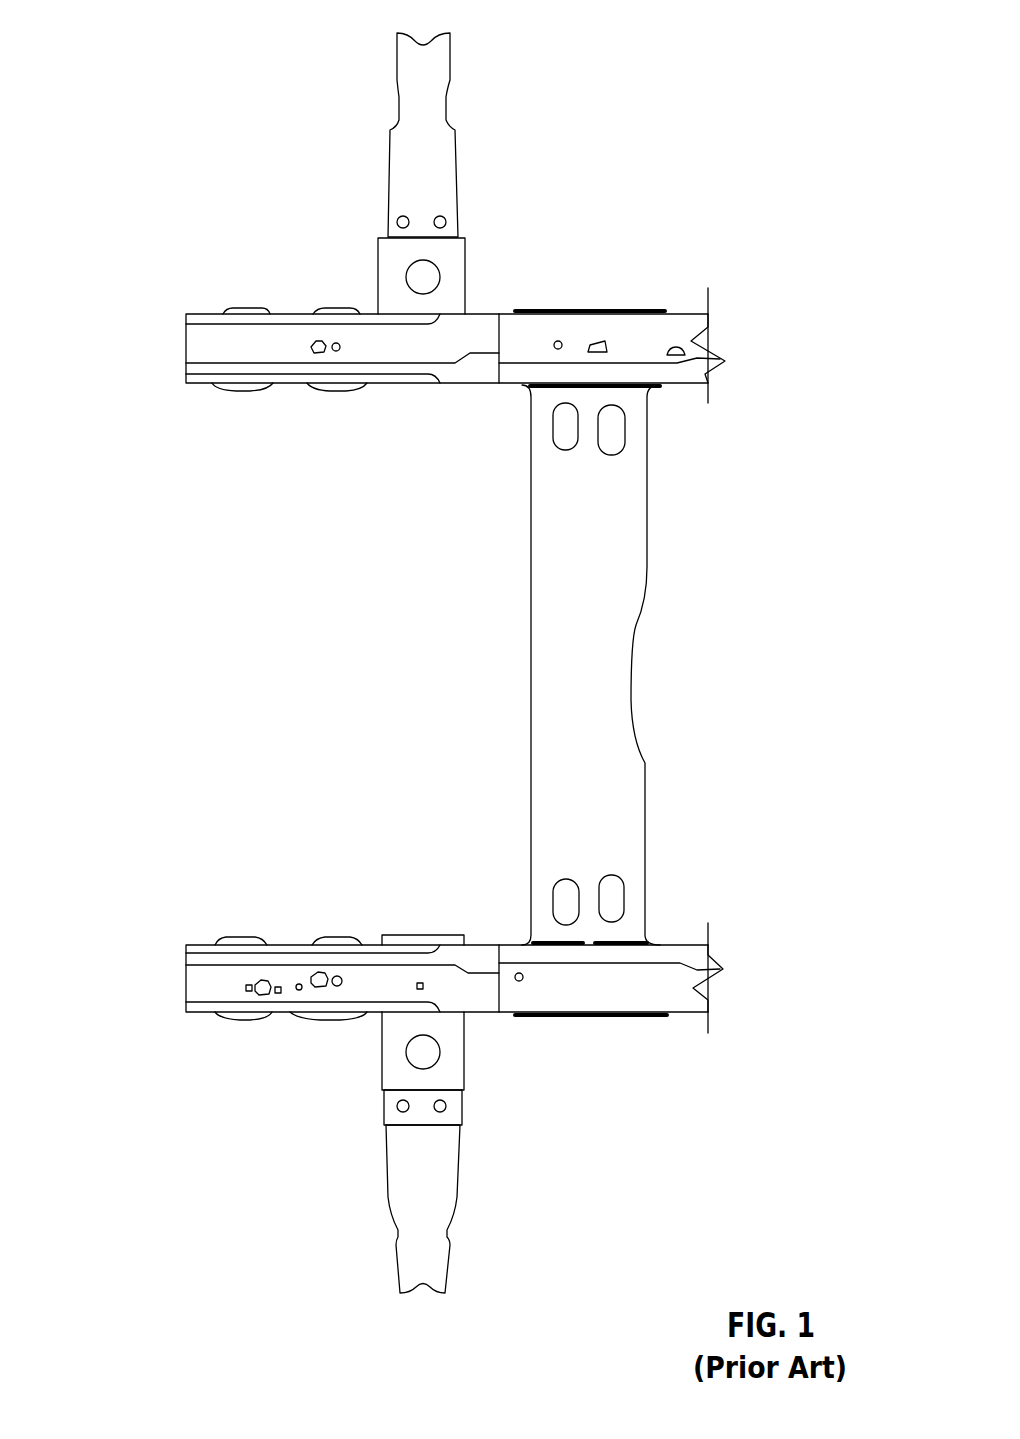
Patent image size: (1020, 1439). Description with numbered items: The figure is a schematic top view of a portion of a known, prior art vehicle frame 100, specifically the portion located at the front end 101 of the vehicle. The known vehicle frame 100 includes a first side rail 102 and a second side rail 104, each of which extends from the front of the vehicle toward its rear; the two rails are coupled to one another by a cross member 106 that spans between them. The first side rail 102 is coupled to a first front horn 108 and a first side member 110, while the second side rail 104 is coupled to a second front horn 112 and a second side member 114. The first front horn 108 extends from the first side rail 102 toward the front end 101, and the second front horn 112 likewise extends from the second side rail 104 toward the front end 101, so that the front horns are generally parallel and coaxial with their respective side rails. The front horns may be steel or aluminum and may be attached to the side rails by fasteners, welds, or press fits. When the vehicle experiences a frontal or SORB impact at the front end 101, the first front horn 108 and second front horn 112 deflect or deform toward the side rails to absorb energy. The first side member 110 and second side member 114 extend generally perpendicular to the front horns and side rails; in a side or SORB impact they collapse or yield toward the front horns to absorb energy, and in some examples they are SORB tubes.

The known vehicle frame 100 is at (606, 37).
The front end 101 is at (118, 621).
The first side rail 102 is at (685, 313).
The second side rail 104 is at (687, 1015).
The cross member 106 is at (632, 655).
The first front horn 108 is at (202, 313).
The first side member 110 is at (458, 183).
The second front horn 112 is at (200, 943).
The second side member 114 is at (458, 1170).